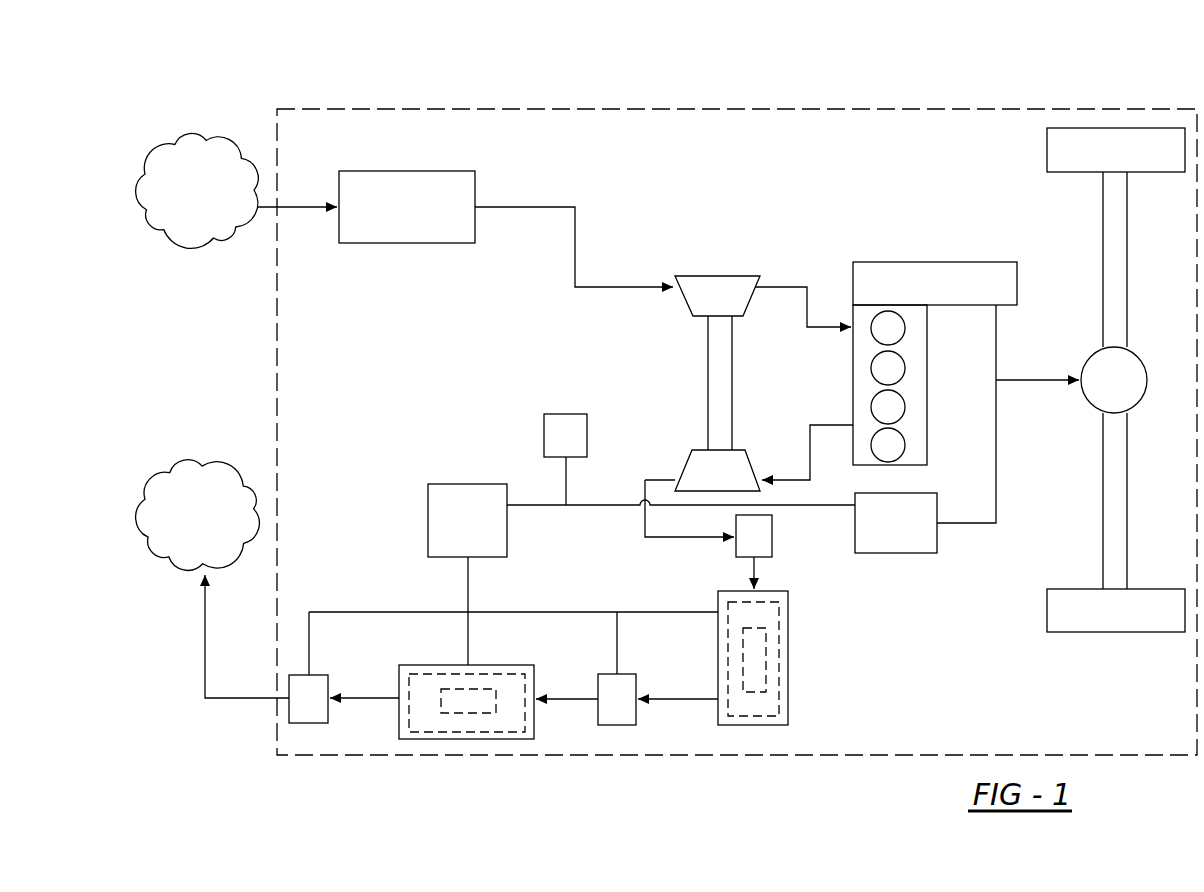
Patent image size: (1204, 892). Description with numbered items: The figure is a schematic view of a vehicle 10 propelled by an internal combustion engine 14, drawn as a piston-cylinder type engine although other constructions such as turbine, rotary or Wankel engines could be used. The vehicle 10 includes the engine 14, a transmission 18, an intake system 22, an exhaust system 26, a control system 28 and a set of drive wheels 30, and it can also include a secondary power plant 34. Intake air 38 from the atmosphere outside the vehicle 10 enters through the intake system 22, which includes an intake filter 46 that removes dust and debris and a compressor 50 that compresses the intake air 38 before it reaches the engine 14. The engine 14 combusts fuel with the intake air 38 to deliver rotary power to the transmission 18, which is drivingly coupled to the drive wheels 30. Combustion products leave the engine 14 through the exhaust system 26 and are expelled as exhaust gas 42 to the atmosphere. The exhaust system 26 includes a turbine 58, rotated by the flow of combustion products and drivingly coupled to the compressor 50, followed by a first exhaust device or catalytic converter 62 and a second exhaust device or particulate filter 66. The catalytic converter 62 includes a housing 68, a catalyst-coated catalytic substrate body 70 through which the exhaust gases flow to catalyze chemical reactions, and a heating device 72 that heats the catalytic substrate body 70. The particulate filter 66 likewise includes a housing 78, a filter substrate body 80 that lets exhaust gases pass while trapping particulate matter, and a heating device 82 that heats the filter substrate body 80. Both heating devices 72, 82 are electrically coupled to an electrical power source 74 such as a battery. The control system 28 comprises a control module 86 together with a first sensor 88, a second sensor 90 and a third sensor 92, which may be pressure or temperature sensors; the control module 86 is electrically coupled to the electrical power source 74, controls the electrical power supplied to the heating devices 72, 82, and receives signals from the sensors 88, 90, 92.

The vehicle 10 is at (787, 106).
The internal combustion engine 14 is at (862, 385).
The transmission 18 is at (928, 274).
The intake system 22 is at (596, 191).
The exhaust system 26 is at (812, 672).
The control system 28 is at (371, 566).
The drive wheels 30 is at (1115, 137).
The secondary power plant 34 is at (918, 543).
The intake air 38 is at (190, 163).
The exhaust gas 42 is at (190, 497).
The intake filter 46 is at (395, 227).
The compressor 50 is at (705, 282).
The turbine 58 is at (692, 465).
The catalytic converter 62 is at (738, 729).
The particulate filter 66 is at (532, 742).
The housing 68 is at (762, 727).
The catalytic substrate body 70 is at (770, 705).
The heating device 72 is at (755, 642).
The electrical power source 74 is at (561, 415).
The housing 78 is at (396, 722).
The filter substrate body 80 is at (430, 720).
The heating device 82 is at (478, 705).
The control module 86 is at (457, 492).
The first sensor 88 is at (772, 530).
The second sensor 90 is at (620, 717).
The third sensor 92 is at (310, 724).